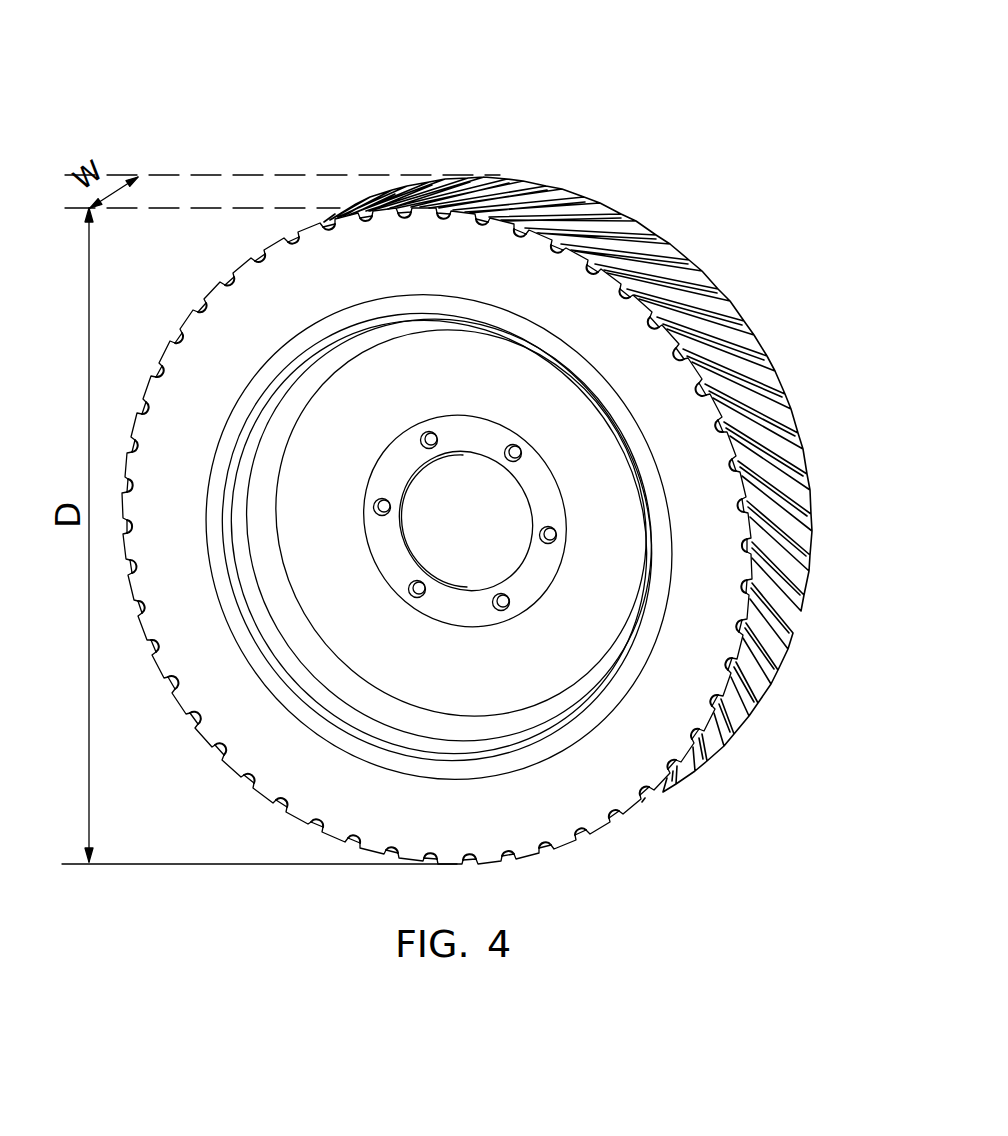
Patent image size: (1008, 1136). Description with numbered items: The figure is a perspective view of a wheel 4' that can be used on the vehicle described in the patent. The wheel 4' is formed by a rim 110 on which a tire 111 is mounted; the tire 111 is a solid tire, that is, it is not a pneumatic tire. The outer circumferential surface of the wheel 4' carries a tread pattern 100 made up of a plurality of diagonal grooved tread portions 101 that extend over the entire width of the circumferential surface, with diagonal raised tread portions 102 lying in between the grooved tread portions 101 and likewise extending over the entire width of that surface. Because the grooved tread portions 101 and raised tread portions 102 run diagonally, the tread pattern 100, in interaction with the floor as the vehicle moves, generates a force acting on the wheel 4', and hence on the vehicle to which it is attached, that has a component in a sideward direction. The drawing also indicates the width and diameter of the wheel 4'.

The tread pattern 100 is at (625, 244).
The rim 110 is at (437, 305).
The tire 111 is at (520, 283).
The grooved tread portions 101 is at (768, 343).
The raised tread portions 102 is at (743, 320).
The wheel 4' is at (763, 151).